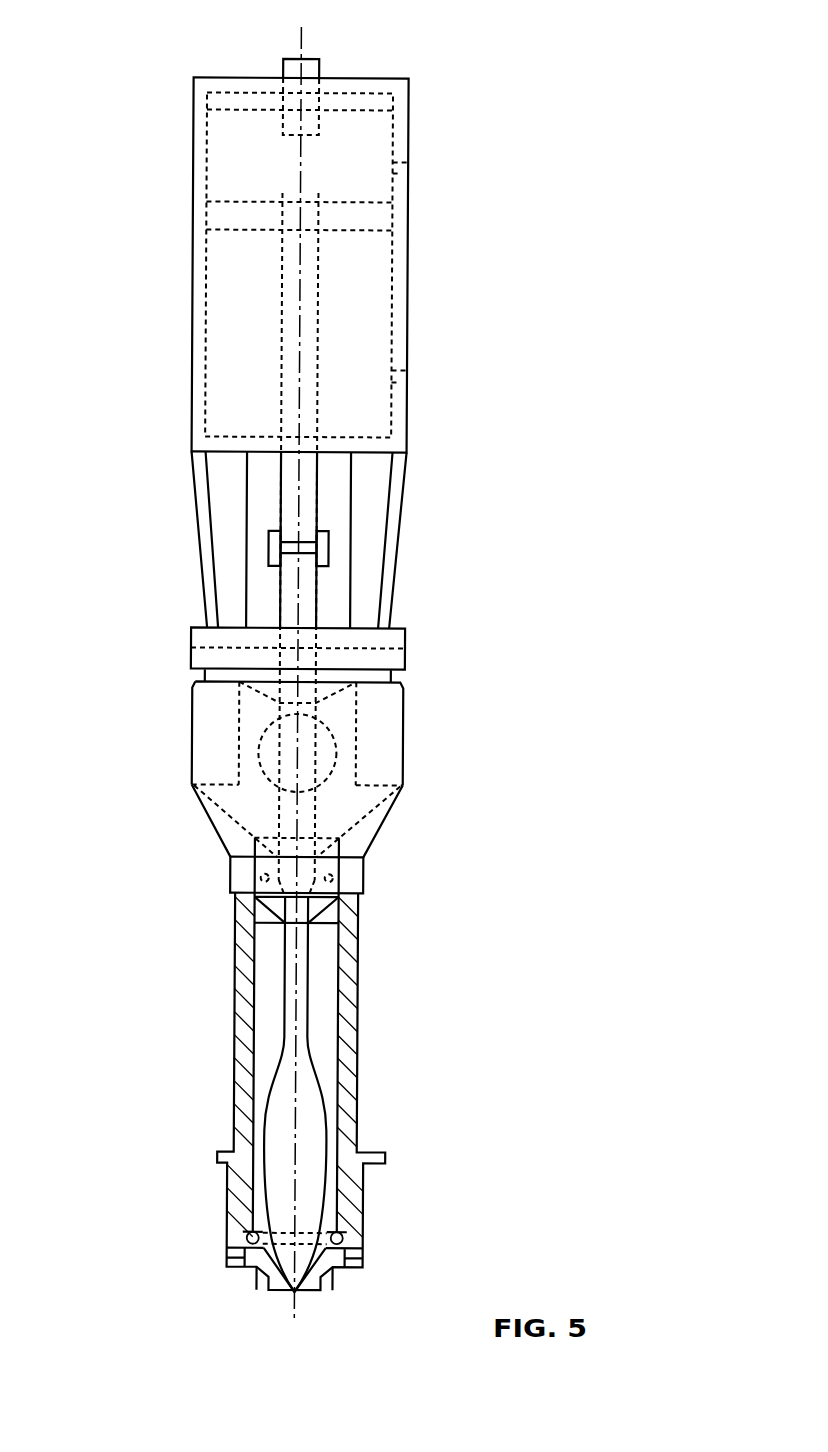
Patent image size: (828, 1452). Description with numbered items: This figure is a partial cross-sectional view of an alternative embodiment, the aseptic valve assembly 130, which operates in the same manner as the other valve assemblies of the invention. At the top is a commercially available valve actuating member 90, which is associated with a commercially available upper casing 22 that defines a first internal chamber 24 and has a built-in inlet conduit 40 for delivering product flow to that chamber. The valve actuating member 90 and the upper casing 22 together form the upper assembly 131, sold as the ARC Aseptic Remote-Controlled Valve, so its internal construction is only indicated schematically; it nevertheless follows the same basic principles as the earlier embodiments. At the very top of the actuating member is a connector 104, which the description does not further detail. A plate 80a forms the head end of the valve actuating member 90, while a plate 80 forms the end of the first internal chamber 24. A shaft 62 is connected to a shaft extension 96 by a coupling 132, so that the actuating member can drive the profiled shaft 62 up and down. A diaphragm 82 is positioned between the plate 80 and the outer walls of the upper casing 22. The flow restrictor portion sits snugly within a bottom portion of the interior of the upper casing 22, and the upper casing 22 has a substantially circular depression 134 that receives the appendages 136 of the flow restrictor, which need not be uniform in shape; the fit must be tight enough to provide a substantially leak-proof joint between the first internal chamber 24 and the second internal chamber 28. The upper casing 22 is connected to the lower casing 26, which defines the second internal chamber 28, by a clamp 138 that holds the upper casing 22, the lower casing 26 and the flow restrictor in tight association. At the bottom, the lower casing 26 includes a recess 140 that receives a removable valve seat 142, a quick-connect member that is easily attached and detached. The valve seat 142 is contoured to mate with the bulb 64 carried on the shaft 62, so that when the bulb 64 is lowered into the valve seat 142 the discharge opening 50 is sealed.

The aseptic valve assembly 130 is at (629, 229).
The valve actuating member 90 is at (411, 261).
The actuator connector 104 is at (310, 128).
The plate 80a is at (360, 443).
The upper assembly 131 is at (186, 478).
The shaft extension 96 is at (307, 503).
The shaft 62 is at (307, 613).
The coupling 132 is at (267, 551).
The plate 80 is at (380, 675).
The first internal chamber 24 is at (340, 793).
The diaphragm 82 is at (263, 695).
The inlet conduit 40 is at (267, 775).
The upper casing 22 is at (389, 833).
The appendages 136 is at (252, 837).
The circular depression 134 is at (345, 843).
The clamp 138 is at (350, 877).
The lower casing 26 is at (348, 1053).
The second internal chamber 28 is at (334, 998).
The bulb 64 is at (277, 1103).
The recess 140 is at (363, 1243).
The valve seat 142 is at (340, 1270).
The discharge opening 50 is at (277, 1282).